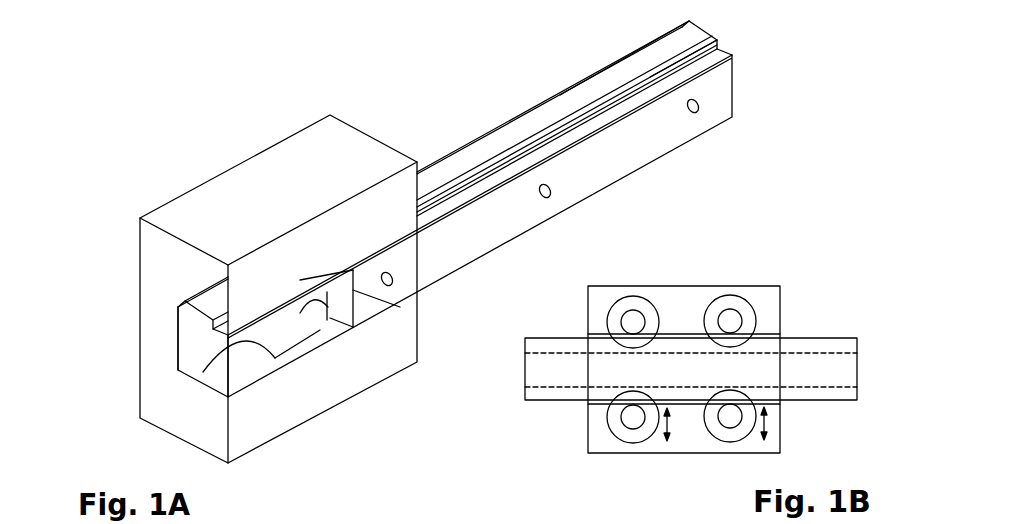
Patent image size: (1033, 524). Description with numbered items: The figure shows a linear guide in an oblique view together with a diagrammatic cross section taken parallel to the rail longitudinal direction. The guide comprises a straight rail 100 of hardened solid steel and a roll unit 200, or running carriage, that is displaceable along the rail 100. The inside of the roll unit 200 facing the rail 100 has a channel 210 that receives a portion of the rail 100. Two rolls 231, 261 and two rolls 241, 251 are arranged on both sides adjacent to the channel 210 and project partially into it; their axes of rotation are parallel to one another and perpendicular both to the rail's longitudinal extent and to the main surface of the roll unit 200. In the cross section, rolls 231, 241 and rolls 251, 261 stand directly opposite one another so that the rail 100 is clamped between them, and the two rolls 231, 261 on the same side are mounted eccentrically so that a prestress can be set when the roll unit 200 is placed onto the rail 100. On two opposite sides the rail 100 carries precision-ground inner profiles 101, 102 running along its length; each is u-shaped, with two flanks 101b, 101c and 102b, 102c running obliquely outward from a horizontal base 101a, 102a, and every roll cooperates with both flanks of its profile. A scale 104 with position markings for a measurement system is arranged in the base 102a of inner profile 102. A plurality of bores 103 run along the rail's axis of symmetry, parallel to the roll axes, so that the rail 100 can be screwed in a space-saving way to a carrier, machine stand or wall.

In FIG. 1A, the rail 100 is at (640, 155).
In FIG. 1B, the rail 100 is at (803, 390).
In FIG. 1A, the inner profile 101 is at (322, 284).
In FIG. 1A, the base 101a is at (360, 300).
In FIG. 1A, the flank 101b is at (330, 315).
In FIG. 1A, the flank 101c is at (320, 290).
In FIG. 1A, the inner profile 102 is at (529, 128).
In FIG. 1A, the base 102a is at (702, 45).
In FIG. 1A, the flank 102b is at (653, 57).
In FIG. 1A, the flank 102c is at (640, 83).
In FIG. 1A, the bores 103 is at (550, 193).
In FIG. 1A, the scale 104 is at (510, 160).
In FIG. 1A, the roll unit 200 is at (243, 168).
In FIG. 1B, the roll unit 200 is at (693, 293).
In FIG. 1A, the channel 210 is at (170, 344).
In FIG. 1B, the channel 210 is at (778, 333).
In FIG. 1A, the roll 231 is at (235, 360).
In FIG. 1B, the roll 231 is at (632, 435).
In FIG. 1B, the roll 241 is at (633, 305).
In FIG. 1B, the roll 251 is at (731, 303).
In FIG. 1A, the roll 261 is at (327, 323).
In FIG. 1B, the roll 261 is at (724, 435).